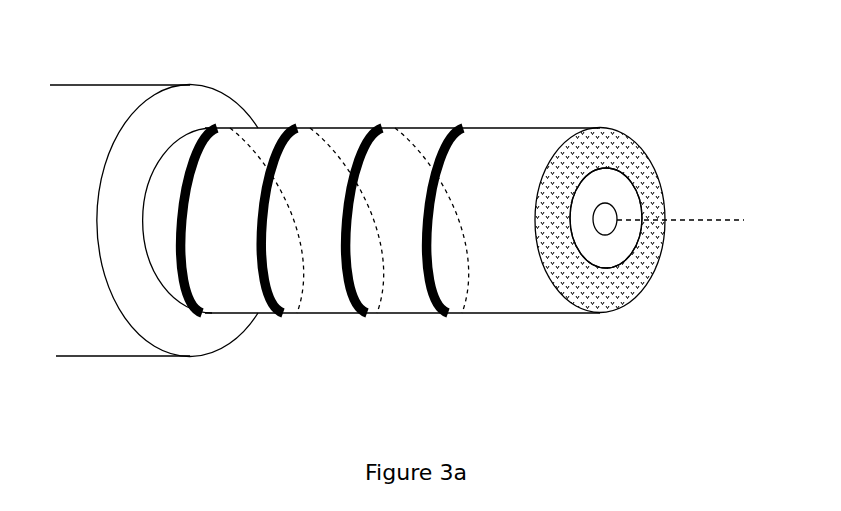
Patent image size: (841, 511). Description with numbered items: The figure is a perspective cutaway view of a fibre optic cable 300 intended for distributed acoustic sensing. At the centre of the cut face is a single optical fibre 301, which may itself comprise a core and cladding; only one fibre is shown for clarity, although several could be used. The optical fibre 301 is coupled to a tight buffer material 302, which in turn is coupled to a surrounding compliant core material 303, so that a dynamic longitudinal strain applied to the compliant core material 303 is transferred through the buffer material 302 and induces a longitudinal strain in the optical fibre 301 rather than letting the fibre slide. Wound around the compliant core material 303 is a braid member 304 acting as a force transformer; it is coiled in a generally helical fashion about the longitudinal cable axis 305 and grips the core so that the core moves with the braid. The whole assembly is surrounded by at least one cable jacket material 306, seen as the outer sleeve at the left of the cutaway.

The fibre optic cable 300 is at (649, 72).
The optical fibre 301 is at (607, 203).
The tight buffer material 302 is at (633, 255).
The compliant core material 303 is at (607, 172).
The braid member 304 is at (348, 312).
The longitudinal cable axis 305 is at (697, 222).
The cable jacket material 306 is at (173, 85).